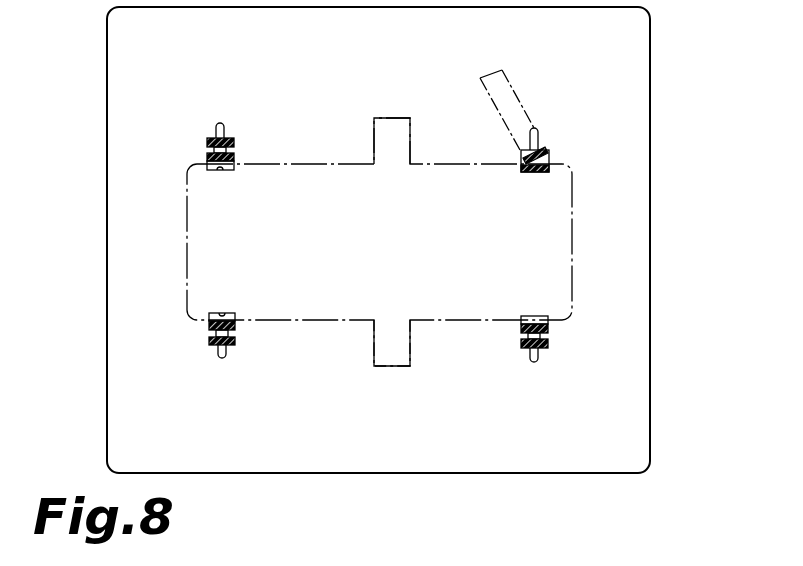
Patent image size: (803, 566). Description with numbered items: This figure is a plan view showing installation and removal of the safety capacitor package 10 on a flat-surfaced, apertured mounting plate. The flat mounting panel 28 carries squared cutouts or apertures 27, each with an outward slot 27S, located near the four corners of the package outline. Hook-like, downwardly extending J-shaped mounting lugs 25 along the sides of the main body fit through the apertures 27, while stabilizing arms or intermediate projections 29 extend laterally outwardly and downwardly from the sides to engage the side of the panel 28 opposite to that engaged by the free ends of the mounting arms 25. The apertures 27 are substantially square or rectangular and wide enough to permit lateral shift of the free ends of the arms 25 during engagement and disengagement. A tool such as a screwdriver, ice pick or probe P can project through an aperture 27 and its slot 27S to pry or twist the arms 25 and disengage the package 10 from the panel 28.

The package 10 is at (324, 163).
The J-shaped mounting lugs 25 is at (235, 157).
The apertures 27 is at (220, 170).
The outward slot 27S is at (218, 132).
The flat mounting panel 28 is at (118, 426).
The stabilizing arms 29 is at (392, 115).
The probe P is at (517, 100).